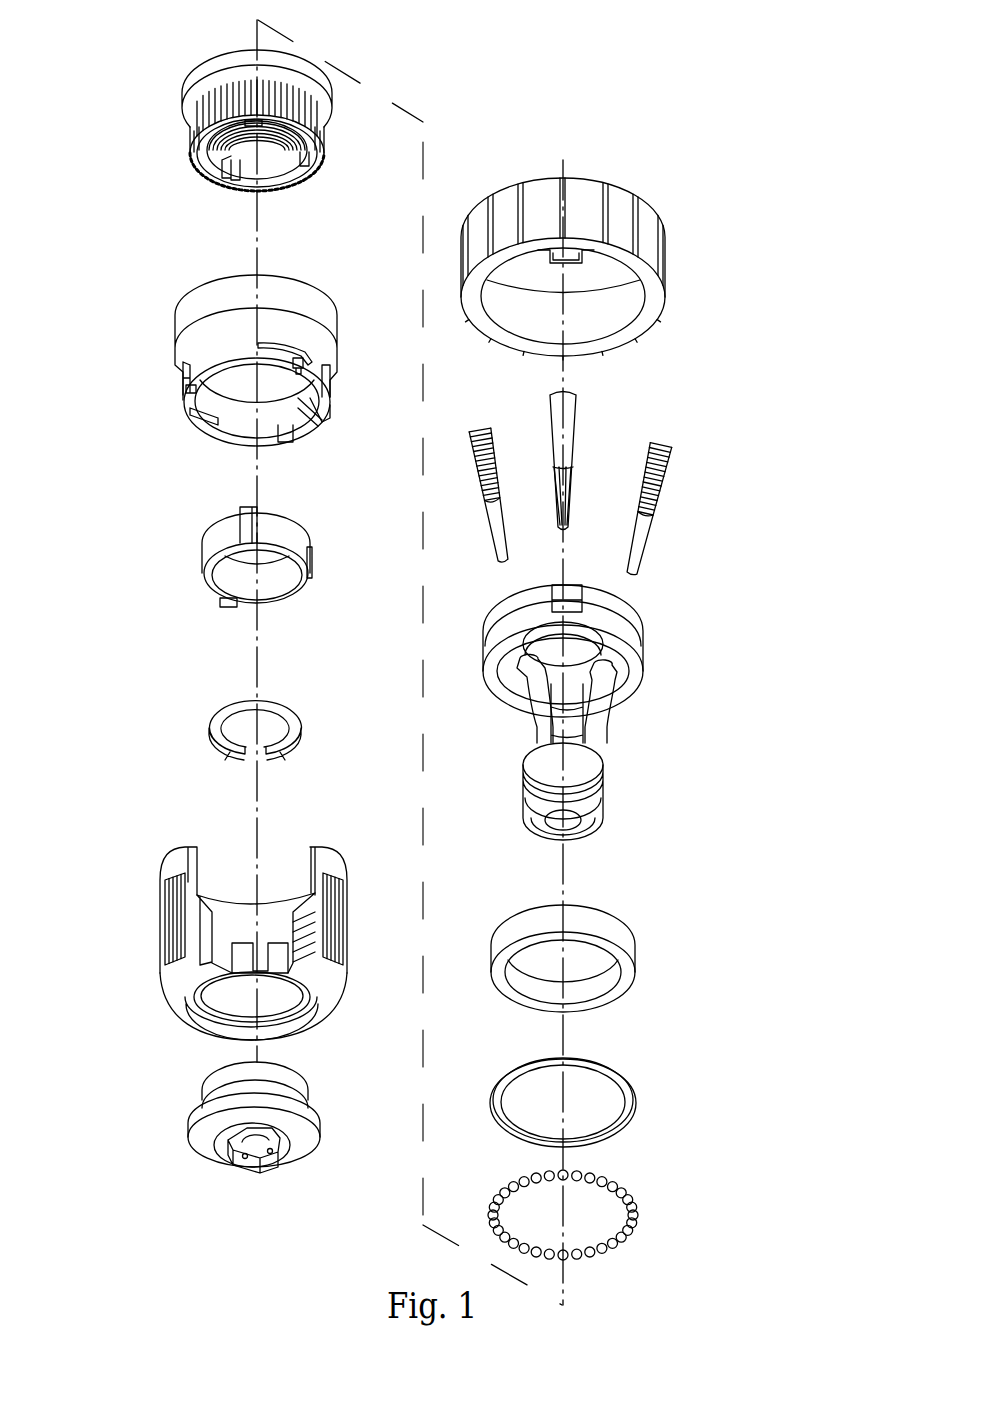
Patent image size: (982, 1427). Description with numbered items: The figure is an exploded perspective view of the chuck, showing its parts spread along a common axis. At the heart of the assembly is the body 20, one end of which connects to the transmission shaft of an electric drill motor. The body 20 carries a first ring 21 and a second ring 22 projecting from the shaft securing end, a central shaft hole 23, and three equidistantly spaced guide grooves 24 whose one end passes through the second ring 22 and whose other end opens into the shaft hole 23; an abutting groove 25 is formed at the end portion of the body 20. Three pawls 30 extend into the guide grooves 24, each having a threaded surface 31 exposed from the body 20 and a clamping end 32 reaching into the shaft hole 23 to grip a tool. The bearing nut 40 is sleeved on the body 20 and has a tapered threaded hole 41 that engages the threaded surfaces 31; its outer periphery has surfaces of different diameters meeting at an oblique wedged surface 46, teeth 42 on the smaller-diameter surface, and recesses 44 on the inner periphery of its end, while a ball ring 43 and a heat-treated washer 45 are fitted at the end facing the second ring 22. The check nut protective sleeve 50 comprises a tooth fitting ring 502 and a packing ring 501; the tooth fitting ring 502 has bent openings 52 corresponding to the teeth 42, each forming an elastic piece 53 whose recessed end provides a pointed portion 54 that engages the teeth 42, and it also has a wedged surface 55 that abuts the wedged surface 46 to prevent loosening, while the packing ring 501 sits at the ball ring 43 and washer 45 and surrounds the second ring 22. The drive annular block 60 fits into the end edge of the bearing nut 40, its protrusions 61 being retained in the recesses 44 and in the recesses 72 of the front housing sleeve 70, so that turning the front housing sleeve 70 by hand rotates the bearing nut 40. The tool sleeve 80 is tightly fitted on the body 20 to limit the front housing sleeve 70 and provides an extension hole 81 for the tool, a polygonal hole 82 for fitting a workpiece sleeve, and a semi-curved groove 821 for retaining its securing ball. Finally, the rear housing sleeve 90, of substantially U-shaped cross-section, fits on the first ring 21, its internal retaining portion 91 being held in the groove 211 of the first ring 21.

The body 20 is at (695, 640).
The first ring 21 is at (628, 632).
The groove 211 is at (568, 590).
The second ring 22 is at (620, 698).
The shaft hole 23 is at (580, 822).
The guide grooves 24 is at (595, 728).
The abutting groove 25 is at (592, 783).
The pawls 30 is at (598, 463).
The threaded surface 31 is at (490, 440).
The clamping end 32 is at (505, 540).
The bearing nut 40 is at (150, 100).
The tapered threaded hole 41 is at (217, 147).
The teeth 42 is at (187, 123).
The ball ring 43 is at (637, 1212).
The recesses 44 is at (232, 172).
The washer 45 is at (640, 1100).
The wedged surface 46 is at (207, 88).
The check nut protective sleeve 50 is at (148, 353).
The packing ring 501 is at (632, 933).
The tooth fitting ring 502 is at (185, 372).
The bent openings 52 is at (285, 345).
The elastic piece 53 is at (300, 372).
The pointed portion 54 is at (330, 400).
The wedged surface 55 is at (190, 332).
The drive annular block 60 is at (210, 553).
The protrusions 61 is at (243, 520).
The front housing sleeve 70 is at (163, 955).
The recesses 72 is at (225, 953).
The tool sleeve 80 is at (150, 1108).
The extension hole 81 is at (225, 1148).
The polygonal hole 82 is at (258, 1160).
The semi-curved groove 821 is at (278, 1150).
The rear housing sleeve 90 is at (653, 248).
The retaining portion 91 is at (573, 260).